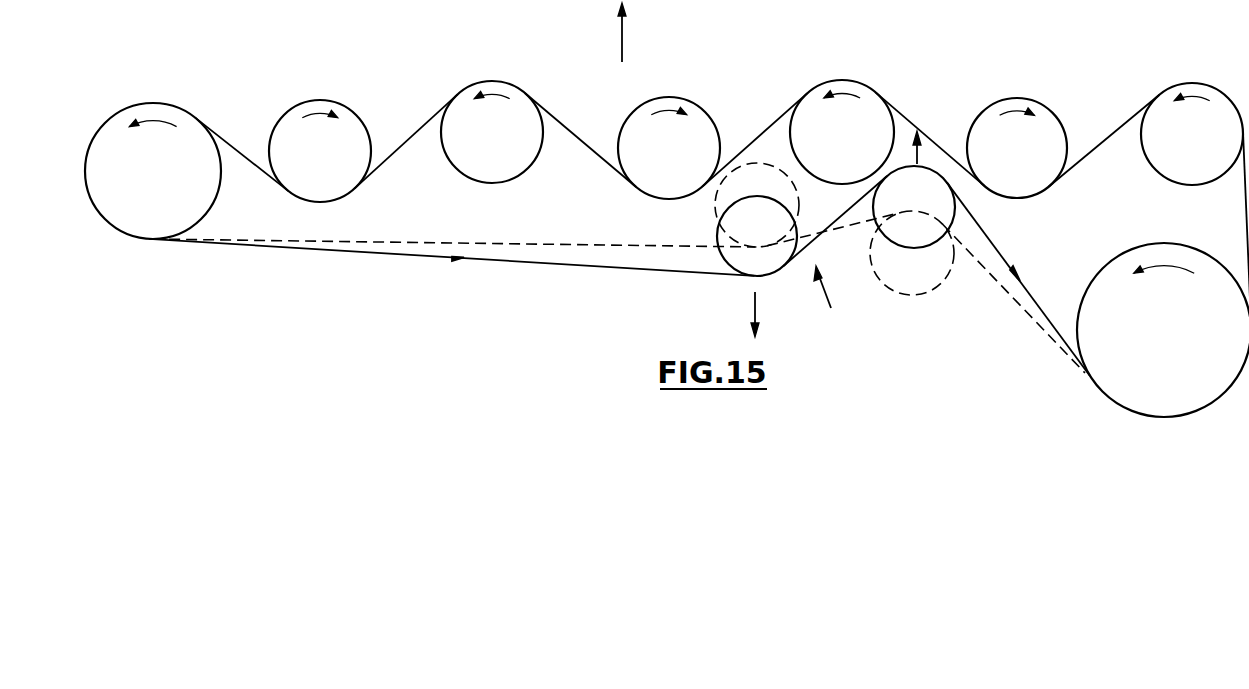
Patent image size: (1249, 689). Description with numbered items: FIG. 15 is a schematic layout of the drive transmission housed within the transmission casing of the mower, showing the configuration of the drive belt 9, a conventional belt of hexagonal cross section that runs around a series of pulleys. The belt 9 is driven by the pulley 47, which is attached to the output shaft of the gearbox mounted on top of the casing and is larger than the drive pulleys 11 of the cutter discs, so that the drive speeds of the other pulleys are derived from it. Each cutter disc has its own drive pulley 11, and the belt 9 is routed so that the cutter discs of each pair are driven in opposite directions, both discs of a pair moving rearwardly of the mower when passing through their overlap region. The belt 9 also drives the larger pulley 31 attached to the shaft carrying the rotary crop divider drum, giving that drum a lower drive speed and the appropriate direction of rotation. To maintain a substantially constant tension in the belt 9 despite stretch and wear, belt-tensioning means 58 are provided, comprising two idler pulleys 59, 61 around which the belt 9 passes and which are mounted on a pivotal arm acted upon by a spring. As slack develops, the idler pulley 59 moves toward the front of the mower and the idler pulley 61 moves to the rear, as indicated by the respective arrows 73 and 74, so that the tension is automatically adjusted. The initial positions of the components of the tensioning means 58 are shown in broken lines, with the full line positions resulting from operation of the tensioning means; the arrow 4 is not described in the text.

The direction of web travel 4 is at (622, 52).
The drive belt 9 is at (575, 146).
The drive pulley 11 is at (306, 168).
The pulley 31 is at (1143, 342).
The pulley 47 is at (161, 192).
The belt-tensioning means 58 is at (836, 303).
The idler pulley 59 is at (897, 205).
The idler pulley 61 is at (740, 235).
The arrow 73 is at (928, 148).
The arrow 74 is at (751, 312).